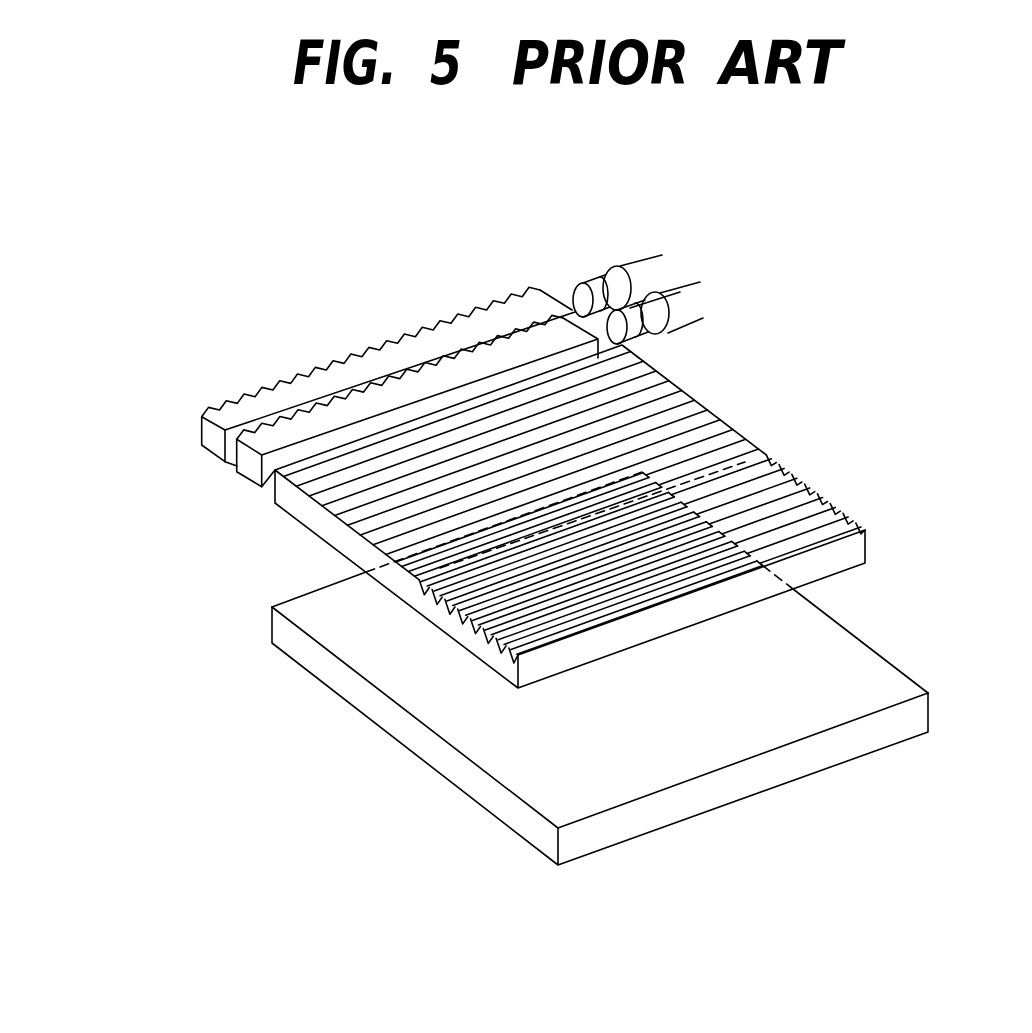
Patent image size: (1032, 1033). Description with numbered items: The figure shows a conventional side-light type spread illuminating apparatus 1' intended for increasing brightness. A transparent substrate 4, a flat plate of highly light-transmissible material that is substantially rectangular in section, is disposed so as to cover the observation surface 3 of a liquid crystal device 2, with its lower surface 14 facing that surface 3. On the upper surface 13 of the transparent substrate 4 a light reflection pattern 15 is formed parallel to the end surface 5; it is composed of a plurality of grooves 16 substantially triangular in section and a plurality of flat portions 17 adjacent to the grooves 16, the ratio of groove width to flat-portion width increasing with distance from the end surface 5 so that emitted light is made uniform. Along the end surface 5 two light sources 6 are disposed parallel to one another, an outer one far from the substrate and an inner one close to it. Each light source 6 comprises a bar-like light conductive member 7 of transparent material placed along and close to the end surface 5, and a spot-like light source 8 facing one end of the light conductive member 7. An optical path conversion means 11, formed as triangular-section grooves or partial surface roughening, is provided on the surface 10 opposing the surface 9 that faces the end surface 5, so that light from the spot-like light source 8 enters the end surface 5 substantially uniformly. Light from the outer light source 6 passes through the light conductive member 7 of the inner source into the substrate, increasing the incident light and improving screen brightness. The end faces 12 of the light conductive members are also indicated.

The spread illuminating apparatus 1' is at (540, 516).
The liquid crystal device 2 is at (767, 790).
The surface 3 is at (863, 677).
The transparent substrate 4 is at (633, 632).
The end surface 5 is at (402, 439).
The light source 6 is at (634, 228).
The light conductive member 7 is at (580, 317).
The spot-like light source 8 is at (603, 274).
The surface 9 is at (298, 450).
The surface 10 is at (327, 381).
The optical path conversion means 11 is at (372, 388).
The end face of lid 12 is at (203, 428).
The surface 13 is at (835, 505).
The lower surface 14 is at (838, 580).
The light reflection pattern 15 is at (672, 476).
The grooves 16 is at (818, 500).
The flat portions 17 is at (773, 463).